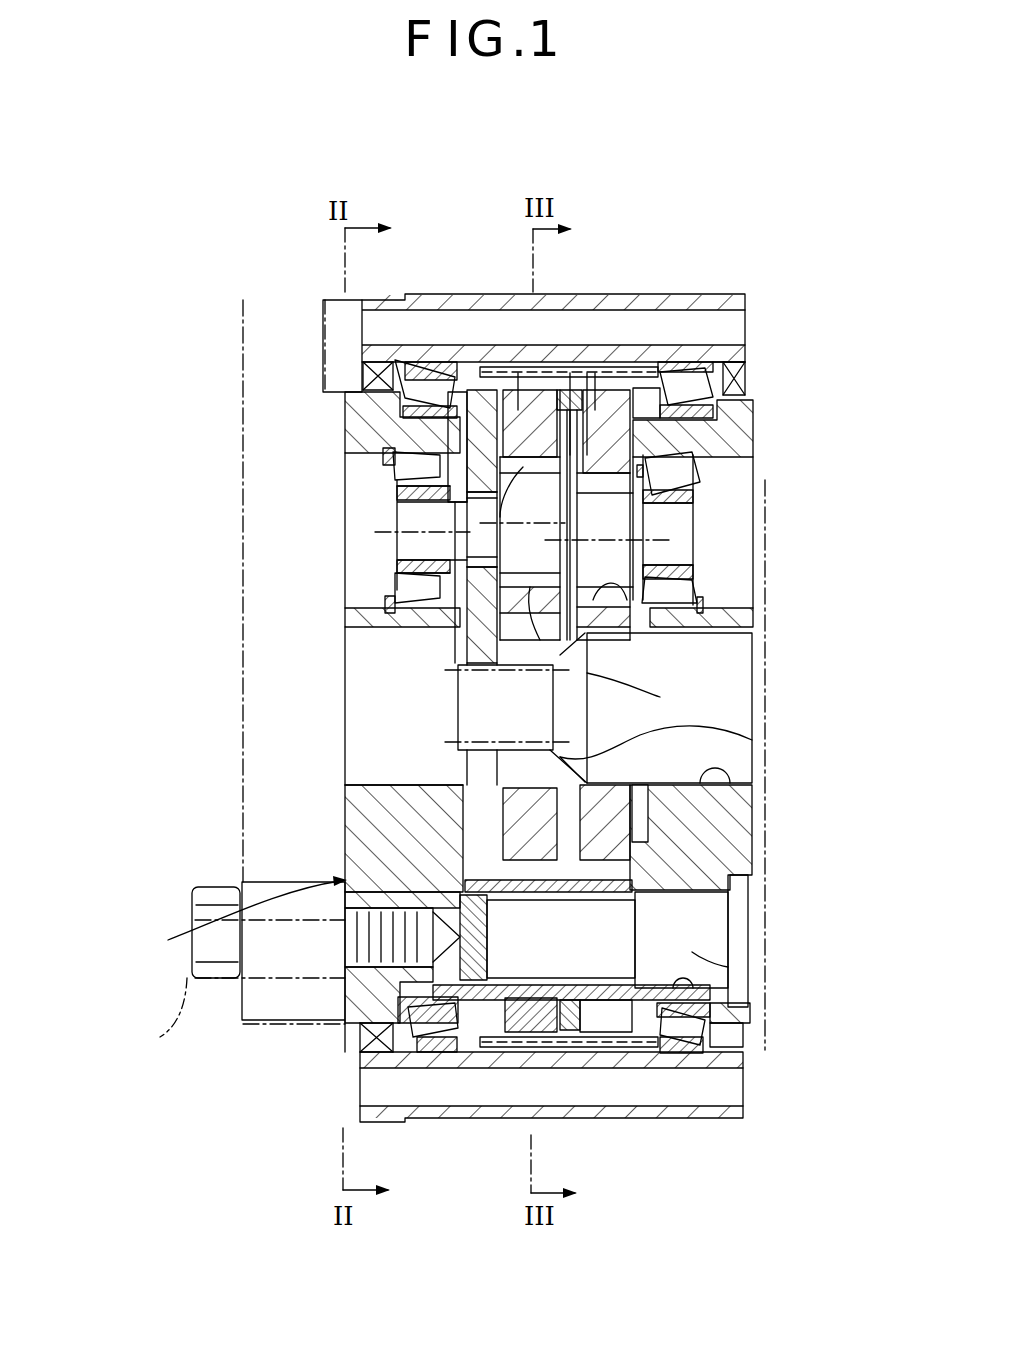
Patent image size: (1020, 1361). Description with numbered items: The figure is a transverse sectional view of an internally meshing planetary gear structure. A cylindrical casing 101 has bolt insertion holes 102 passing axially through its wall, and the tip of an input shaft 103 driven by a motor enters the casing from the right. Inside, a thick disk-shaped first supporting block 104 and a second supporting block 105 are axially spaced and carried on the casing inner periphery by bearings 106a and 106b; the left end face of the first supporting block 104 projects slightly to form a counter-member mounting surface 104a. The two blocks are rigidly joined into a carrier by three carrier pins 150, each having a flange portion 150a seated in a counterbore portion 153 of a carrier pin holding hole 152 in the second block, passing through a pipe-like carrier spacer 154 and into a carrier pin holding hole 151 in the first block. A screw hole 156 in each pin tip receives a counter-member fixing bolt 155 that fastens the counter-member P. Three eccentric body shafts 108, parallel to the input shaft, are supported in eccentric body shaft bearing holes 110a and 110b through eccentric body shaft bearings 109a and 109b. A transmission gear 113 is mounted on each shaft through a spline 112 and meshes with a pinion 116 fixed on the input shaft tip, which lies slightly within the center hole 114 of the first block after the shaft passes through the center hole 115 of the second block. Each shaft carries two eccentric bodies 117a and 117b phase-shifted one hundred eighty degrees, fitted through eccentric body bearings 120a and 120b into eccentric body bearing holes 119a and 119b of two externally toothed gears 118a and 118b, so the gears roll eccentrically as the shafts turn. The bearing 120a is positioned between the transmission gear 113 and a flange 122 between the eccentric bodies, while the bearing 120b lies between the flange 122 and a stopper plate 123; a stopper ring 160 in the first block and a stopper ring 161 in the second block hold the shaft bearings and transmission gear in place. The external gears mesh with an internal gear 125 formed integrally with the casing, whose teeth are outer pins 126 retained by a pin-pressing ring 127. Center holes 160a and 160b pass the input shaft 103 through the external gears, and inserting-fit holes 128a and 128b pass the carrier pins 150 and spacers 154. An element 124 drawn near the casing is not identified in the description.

The casing 101 is at (628, 345).
The bolt insertion holes 102 is at (705, 1100).
The input shaft 103 is at (752, 790).
The first supporting block 104 is at (345, 842).
The counter-member mounting surface 104a is at (200, 930).
The second supporting block 105 is at (738, 934).
The bearing 106a is at (425, 400).
The bearing 106b is at (700, 368).
The eccentric body shaft 108 is at (410, 542).
The eccentric body shaft bearing 109a is at (400, 583).
The eccentric body shaft bearing 109b is at (690, 490).
The eccentric body shaft bearing hole 110a is at (387, 603).
The eccentric body shaft bearing hole 110b is at (703, 605).
The spline 112 is at (397, 487).
The transmission gear 113 is at (450, 645).
The center hole 114 is at (372, 787).
The center hole 115 is at (747, 797).
The pinion 116 is at (458, 758).
The eccentric body 117a is at (600, 555).
The eccentric body 117b is at (620, 510).
The externally toothed gear 118a is at (518, 373).
The externally toothed gear 118b is at (595, 373).
The eccentric body bearing hole 119a is at (560, 655).
The eccentric body bearing hole 119b is at (620, 648).
The eccentric body bearing 120a is at (397, 522).
The eccentric body bearing 120b is at (635, 618).
The flange 122 is at (700, 425).
The stopper plate 123 is at (645, 405).
The ring gear 124 is at (483, 293).
The internal gear 125 is at (570, 373).
The outer pins 126 is at (712, 300).
The pin-pressing ring 127 is at (587, 373).
The inserting-fit hole 128a is at (558, 1040).
The inserting-fit hole 128b is at (623, 1040).
The carrier pin 150 is at (748, 1005).
The flange portion 150a is at (728, 967).
The carrier pin holding hole 151 is at (440, 982).
The carrier pin holding hole 152 is at (690, 1095).
The counterbore portion 153 is at (718, 1025).
The carrier spacer 154 is at (476, 1040).
The counter-member fixing bolt 155 is at (160, 1037).
The screw hole 156 is at (352, 1000).
The stopper ring 160 is at (465, 470).
The center hole 160a is at (752, 740).
The center hole 160b is at (712, 762).
The stopper ring 161 is at (700, 467).
The counter-member P is at (240, 886).